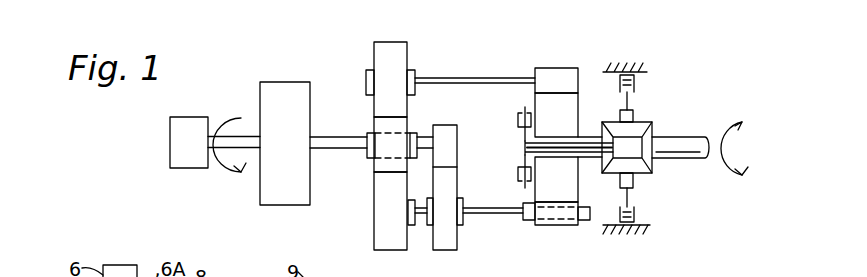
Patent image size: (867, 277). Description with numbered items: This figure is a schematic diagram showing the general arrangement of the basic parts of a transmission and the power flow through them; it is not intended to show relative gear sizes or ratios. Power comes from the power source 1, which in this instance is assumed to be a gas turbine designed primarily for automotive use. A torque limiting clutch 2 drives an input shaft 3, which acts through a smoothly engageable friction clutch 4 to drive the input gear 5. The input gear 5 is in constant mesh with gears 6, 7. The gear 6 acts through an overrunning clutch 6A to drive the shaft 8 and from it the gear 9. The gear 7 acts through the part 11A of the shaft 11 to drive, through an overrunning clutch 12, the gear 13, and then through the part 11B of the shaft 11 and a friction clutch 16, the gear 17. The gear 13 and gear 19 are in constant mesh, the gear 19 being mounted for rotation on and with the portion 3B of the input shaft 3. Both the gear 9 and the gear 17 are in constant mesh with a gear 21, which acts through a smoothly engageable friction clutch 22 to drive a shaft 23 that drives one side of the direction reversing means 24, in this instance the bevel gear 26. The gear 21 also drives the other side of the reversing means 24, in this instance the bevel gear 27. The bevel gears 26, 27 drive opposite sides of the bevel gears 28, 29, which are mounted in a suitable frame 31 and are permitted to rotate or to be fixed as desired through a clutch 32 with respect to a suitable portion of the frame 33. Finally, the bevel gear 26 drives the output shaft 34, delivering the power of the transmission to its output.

The power source 1 is at (184, 170).
The torque limiting clutch 2 is at (282, 198).
The input shaft 3 is at (328, 150).
The portion of shaft 3B is at (427, 147).
The friction clutch 4 is at (367, 160).
The input gear 5 is at (383, 124).
The gear 6 is at (407, 51).
The overrunning clutch 6A is at (370, 72).
The gear 7 is at (385, 221).
The shaft 8 is at (473, 77).
The gear 9 is at (556, 68).
The shaft 11 is at (469, 216).
The part of shaft 11A is at (413, 216).
The part of shaft 11B is at (502, 214).
The overrunning clutch 12 is at (461, 201).
The gear 13 is at (452, 240).
The friction clutch 16 is at (584, 222).
The gear 17 is at (567, 223).
The gear 19 is at (450, 142).
The gear 21 is at (568, 184).
The friction clutch 22 is at (521, 107).
The shaft 23 is at (554, 143).
The direction reversing means 24 is at (652, 119).
The bevel gear 26 is at (654, 136).
The bevel gear 27 is at (603, 131).
The bevel gear 28 is at (641, 127).
The bevel gear 29 is at (642, 173).
The frame 31 is at (631, 198).
The clutch 32 is at (634, 218).
The portion of the frame 33 is at (620, 230).
The output shaft 34 is at (687, 150).